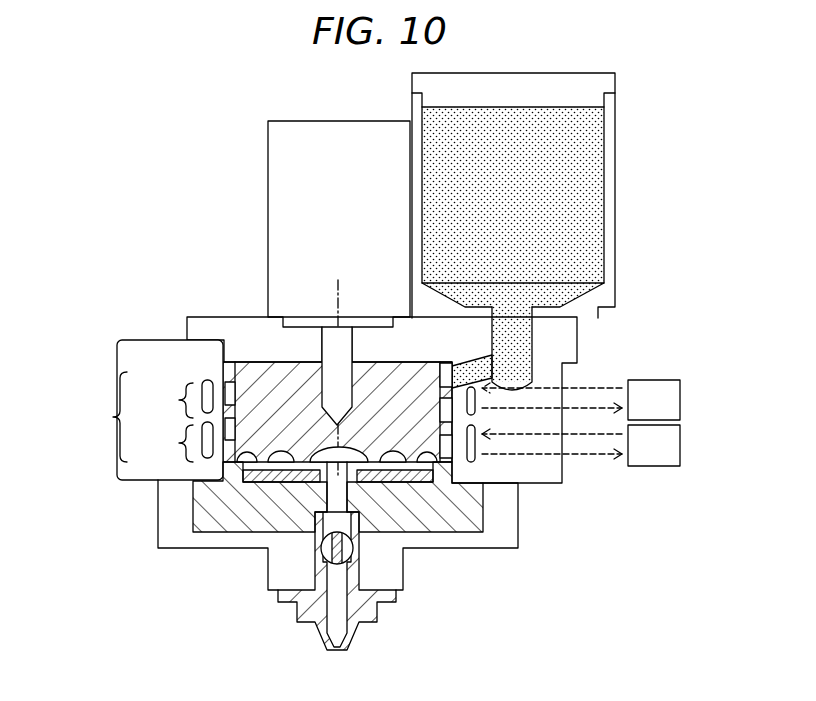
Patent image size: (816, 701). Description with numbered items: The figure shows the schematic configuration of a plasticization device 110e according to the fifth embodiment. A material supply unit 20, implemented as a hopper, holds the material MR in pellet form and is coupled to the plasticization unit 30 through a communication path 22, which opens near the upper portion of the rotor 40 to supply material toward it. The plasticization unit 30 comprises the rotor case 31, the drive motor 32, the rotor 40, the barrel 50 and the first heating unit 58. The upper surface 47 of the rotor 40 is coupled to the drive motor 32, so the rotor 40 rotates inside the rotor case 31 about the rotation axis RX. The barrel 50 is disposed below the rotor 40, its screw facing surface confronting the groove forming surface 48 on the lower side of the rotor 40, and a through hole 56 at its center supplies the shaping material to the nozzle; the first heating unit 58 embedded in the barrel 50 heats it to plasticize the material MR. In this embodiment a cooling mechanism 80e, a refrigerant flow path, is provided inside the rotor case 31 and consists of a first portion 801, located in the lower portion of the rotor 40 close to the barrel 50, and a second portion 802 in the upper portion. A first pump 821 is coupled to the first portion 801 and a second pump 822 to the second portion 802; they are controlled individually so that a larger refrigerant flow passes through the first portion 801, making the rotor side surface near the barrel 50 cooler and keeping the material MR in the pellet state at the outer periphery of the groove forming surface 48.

The plasticization device 110e is at (212, 110).
The plasticization unit 30 is at (166, 183).
The drive motor 32 is at (268, 152).
The rotor case 31 is at (233, 318).
The rotation axis RX is at (338, 290).
The material supply unit 20 is at (618, 190).
The material MR is at (580, 155).
The communication path 22 is at (520, 338).
The rotor 40 is at (224, 372).
The upper surface 47 is at (247, 388).
The cooling mechanism 80e is at (113, 417).
The second portion 802 is at (179, 400).
The first portion 801 is at (179, 443).
The barrel 50 is at (200, 508).
The groove forming surface 48 is at (215, 490).
The through hole 56 is at (415, 478).
The first heating unit 58 is at (340, 497).
The second pump 822 is at (680, 400).
The first pump 821 is at (680, 446).